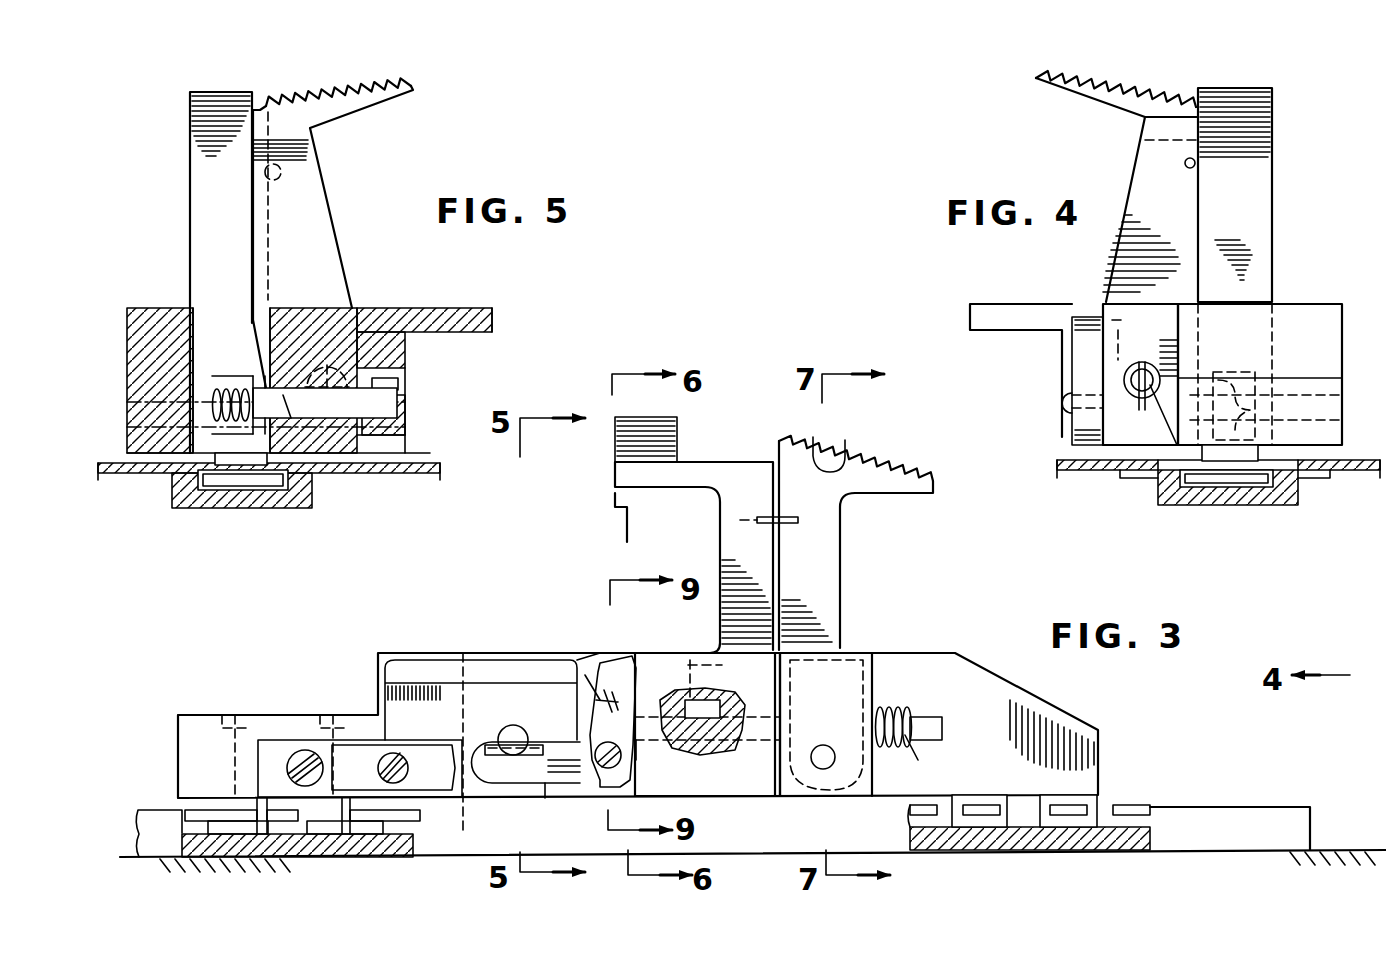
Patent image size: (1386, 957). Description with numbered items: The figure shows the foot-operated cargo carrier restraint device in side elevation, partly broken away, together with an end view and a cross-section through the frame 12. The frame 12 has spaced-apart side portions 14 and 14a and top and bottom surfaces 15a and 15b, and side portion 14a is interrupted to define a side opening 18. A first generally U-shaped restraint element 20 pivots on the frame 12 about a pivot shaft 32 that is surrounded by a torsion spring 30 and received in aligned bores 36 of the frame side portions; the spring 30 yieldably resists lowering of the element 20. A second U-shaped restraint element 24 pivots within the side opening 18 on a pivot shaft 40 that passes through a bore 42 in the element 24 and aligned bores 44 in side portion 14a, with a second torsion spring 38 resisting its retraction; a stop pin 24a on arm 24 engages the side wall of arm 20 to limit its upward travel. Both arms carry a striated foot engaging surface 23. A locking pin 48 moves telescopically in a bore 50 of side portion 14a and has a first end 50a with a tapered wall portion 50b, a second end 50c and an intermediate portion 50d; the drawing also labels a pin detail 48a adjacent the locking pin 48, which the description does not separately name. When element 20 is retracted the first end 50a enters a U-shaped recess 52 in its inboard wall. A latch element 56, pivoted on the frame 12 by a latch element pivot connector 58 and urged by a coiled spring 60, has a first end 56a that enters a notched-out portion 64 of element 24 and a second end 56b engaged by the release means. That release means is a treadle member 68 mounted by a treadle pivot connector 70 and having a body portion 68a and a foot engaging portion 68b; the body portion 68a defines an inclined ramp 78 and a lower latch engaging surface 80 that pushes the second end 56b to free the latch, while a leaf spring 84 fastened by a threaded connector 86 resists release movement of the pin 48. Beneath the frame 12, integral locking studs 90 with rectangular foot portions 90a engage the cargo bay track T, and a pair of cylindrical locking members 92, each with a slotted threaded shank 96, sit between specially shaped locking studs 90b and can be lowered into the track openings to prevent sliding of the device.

In FIG. 5, the frame 12 is at (165, 298).
In FIG. 4, the frame 12 is at (1330, 292).
In FIG. 3, the frame 12 is at (918, 641).
In FIG. 5, the side portion 14 is at (122, 310).
In FIG. 5, the side portion 14a is at (335, 308).
In FIG. 4, the top surface 15a is at (1282, 302).
In FIG. 3, the top surface 15a is at (421, 653).
In FIG. 4, the bottom surface 15b is at (1312, 470).
In FIG. 3, the bottom surface 15b is at (185, 798).
In FIG. 3, the side opening 18 is at (773, 780).
In FIG. 5, the first restraint element 20 is at (192, 163).
In FIG. 4, the first restraint element 20 is at (1276, 182).
In FIG. 3, the first restraint element 20 is at (843, 576).
In FIG. 5, the striated foot engaging surface 23 is at (310, 100).
In FIG. 4, the striated foot engaging surface 23 is at (1232, 88).
In FIG. 3, the striated foot engaging surface 23 is at (890, 466).
In FIG. 5, the second restraint element 24 is at (318, 202).
In FIG. 4, the second restraint element 24 is at (1134, 165).
In FIG. 3, the second restraint element 24 is at (728, 460).
In FIG. 5, the stop pin 24a is at (283, 168).
In FIG. 4, the stop pin 24a is at (1185, 170).
In FIG. 3, the stop pin 24a is at (772, 524).
In FIG. 5, the torsion spring 30 is at (214, 402).
In FIG. 4, the torsion spring 30 is at (1233, 372).
In FIG. 5, the pivot shaft 32 is at (140, 396).
In FIG. 4, the pivot shaft 32 is at (1310, 382).
In FIG. 3, the pivot shaft 32 is at (826, 770).
In FIG. 3, the aligned bores 36 is at (820, 745).
In FIG. 5, the second torsion spring 38 is at (308, 308).
In FIG. 4, the second torsion spring 38 is at (1142, 362).
In FIG. 3, the second torsion spring 38 is at (902, 712).
In FIG. 3, the pivot shaft 40 is at (728, 748).
In FIG. 3, the bore 42 is at (742, 716).
In FIG. 3, the aligned bores 44 is at (562, 660).
In FIG. 5, the locking pin 48 is at (373, 382).
In FIG. 3, the locking pin 48 is at (506, 731).
In FIG. 5, the pin hole 48a is at (385, 405).
In FIG. 3, the pin hole 48a is at (540, 745).
In FIG. 5, the bore 50 is at (340, 430).
In FIG. 5, the first end 50a is at (272, 450).
In FIG. 5, the tapered wall portion 50b is at (262, 396).
In FIG. 5, the second end 50c is at (375, 420).
In FIG. 5, the intermediate portion 50d is at (340, 415).
In FIG. 3, the U-shaped recess 52 is at (838, 455).
In FIG. 4, the latch element 56 is at (1085, 370).
In FIG. 3, the latch element 56 is at (596, 670).
In FIG. 4, the first end 56a is at (1086, 318).
In FIG. 3, the first end 56a is at (612, 660).
In FIG. 3, the second end 56b is at (587, 790).
In FIG. 4, the latch element pivot connector 58 is at (1058, 406).
In FIG. 3, the latch element pivot connector 58 is at (622, 761).
In FIG. 3, the coiled spring 60 is at (636, 745).
In FIG. 3, the notched-out portion 64 is at (656, 668).
In FIG. 5, the treadle member 68 is at (425, 311).
In FIG. 4, the treadle member 68 is at (966, 302).
In FIG. 3, the treadle member 68 is at (450, 658).
In FIG. 5, the body portion 68a is at (405, 352).
In FIG. 4, the body portion 68a is at (998, 300).
In FIG. 3, the body portion 68a is at (463, 806).
In FIG. 5, the foot engaging portion 68b is at (470, 308).
In FIG. 3, the foot engaging portion 68b is at (378, 653).
In FIG. 3, the treadle pivot connector 70 is at (302, 750).
In FIG. 5, the inclined ramp 78 is at (392, 385).
In FIG. 3, the inclined ramp 78 is at (540, 778).
In FIG. 5, the latch engaging surface 80 is at (400, 451).
In FIG. 3, the latch engaging surface 80 is at (556, 784).
In FIG. 5, the leaf spring 84 is at (410, 423).
In FIG. 3, the leaf spring 84 is at (410, 745).
In FIG. 3, the threaded connector 86 is at (408, 768).
In FIG. 5, the locking studs 90 is at (236, 490).
In FIG. 4, the locking studs 90 is at (1235, 490).
In FIG. 3, the locking studs 90 is at (968, 828).
In FIG. 5, the foot portions 90a is at (212, 486).
In FIG. 4, the foot portions 90a is at (1205, 500).
In FIG. 3, the foot portions 90a is at (1042, 830).
In FIG. 3, the specially shaped locking studs 90b is at (285, 835).
In FIG. 3, the locking members 92 is at (213, 835).
In FIG. 3, the threaded shank 96 is at (235, 715).
In FIG. 5, the track T is at (176, 496).
In FIG. 4, the track T is at (1285, 505).
In FIG. 3, the track T is at (1218, 812).